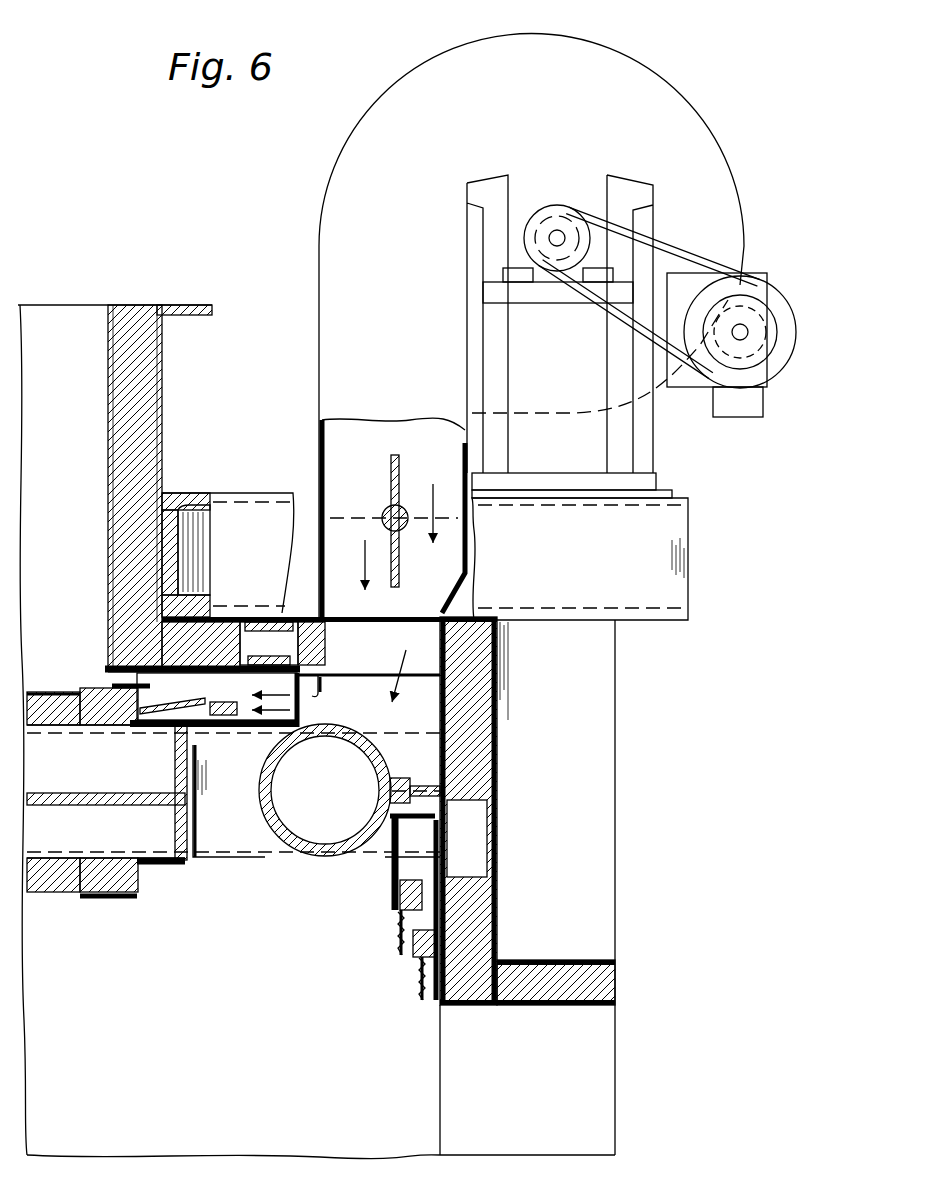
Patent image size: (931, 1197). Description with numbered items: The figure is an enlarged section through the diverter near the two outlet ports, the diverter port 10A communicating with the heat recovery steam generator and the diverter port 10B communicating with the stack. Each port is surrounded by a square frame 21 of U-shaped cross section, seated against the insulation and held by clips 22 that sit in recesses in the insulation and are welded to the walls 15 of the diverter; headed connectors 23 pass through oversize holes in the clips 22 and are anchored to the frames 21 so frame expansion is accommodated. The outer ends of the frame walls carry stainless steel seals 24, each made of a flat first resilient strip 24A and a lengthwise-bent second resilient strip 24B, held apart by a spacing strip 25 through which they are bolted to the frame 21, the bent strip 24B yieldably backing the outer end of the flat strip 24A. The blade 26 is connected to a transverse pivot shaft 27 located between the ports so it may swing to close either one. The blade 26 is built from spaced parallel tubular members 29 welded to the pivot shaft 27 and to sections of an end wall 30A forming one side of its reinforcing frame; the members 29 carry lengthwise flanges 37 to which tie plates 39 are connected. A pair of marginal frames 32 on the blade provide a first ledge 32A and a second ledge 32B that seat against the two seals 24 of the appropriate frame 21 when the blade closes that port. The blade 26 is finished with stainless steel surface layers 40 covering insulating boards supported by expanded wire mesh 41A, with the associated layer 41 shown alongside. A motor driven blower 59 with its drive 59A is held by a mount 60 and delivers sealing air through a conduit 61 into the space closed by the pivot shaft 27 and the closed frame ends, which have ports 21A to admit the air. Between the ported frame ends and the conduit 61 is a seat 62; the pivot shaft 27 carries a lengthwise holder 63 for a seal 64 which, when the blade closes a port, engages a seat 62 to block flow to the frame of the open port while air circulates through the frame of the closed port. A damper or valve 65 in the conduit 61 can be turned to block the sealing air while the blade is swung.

The diverter port 10A is at (604, 1078).
The diverter port 10B is at (80, 301).
The walls of the diverter 15 is at (494, 708).
The square frame 21 is at (248, 728).
The ports 21A is at (305, 705).
The clips 22 is at (267, 645).
The headed connectors 23 is at (262, 658).
The stainless steel seals 24 is at (195, 700).
The first resilient strip 24A is at (400, 942).
The second resilient strip 24B is at (448, 912).
The spacing strip 25 is at (393, 900).
The blade 26 is at (93, 905).
The transverse pivot shaft 27 is at (277, 838).
The tubular members 29 is at (135, 843).
The end wall 30A is at (197, 833).
The marginal frames 32 is at (126, 733).
The first ledge 32A is at (100, 687).
The second ledge 32B is at (147, 727).
The lengthwise flanges 37 is at (127, 793).
The tie plates 39 is at (108, 810).
The surface layers 40 is at (31, 692).
The flange 41 is at (43, 705).
The expanded wire mesh 41A is at (43, 853).
The motor driven blower 59 is at (672, 86).
The motor 59A is at (752, 283).
The mount 60 is at (672, 533).
The conduit 61 is at (428, 645).
The seat 62 is at (320, 688).
The lengthwise holder 63 is at (407, 776).
The seal 64 is at (427, 787).
The damper or valve 65 is at (352, 512).